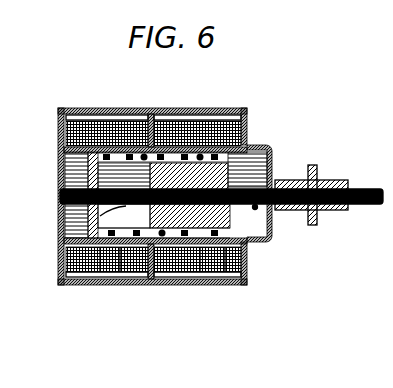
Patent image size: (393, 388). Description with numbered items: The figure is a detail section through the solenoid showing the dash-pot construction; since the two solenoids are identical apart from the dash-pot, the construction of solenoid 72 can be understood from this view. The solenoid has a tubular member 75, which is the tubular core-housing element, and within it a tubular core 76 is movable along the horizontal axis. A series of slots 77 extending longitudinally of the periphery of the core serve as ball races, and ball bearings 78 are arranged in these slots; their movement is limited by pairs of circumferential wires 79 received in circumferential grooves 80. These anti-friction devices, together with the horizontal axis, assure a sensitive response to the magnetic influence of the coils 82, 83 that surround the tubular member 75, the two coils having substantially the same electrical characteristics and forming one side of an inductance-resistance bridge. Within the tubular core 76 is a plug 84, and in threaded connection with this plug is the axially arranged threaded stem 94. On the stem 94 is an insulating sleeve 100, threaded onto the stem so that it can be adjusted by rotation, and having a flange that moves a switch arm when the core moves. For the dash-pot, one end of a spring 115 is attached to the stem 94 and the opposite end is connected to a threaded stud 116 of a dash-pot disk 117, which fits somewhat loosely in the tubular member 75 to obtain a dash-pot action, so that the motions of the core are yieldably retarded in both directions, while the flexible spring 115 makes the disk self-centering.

The solenoid 72 is at (74, 100).
The tubular member 75 is at (254, 143).
The tubular core 76 is at (262, 148).
The slots 77 is at (177, 122).
The ball bearings 78 is at (112, 276).
The circumferential wires 79 is at (93, 276).
The circumferential grooves 80 is at (83, 173).
The coil 82 is at (111, 116).
The coil 83 is at (223, 120).
The plug 84 is at (240, 170).
The threaded stem 94 is at (257, 208).
The insulating sleeve 100 is at (334, 211).
The spring 115 is at (100, 215).
The threaded stud 116 is at (97, 195).
The dash-pot disk 117 is at (100, 227).